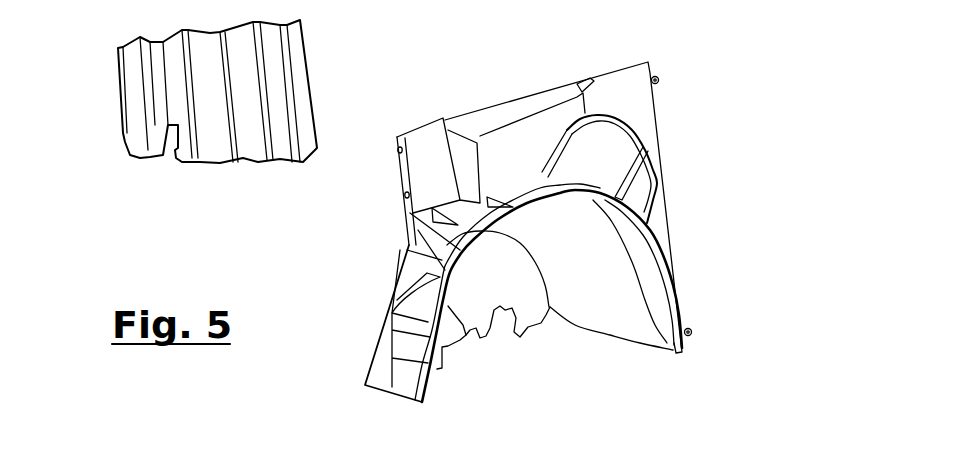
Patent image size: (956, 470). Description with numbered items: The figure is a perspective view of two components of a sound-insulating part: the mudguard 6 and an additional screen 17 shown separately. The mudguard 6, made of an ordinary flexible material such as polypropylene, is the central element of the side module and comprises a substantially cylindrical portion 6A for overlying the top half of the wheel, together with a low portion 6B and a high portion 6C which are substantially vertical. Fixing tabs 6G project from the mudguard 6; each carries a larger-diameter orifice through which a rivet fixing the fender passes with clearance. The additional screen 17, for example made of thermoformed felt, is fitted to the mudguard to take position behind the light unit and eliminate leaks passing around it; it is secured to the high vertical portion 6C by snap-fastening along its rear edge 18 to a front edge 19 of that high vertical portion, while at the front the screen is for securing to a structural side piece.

The mudguard 6 is at (202, 243).
The substantially cylindrical portion 6A is at (440, 238).
The low vertical portion 6B is at (450, 308).
The high vertical portion 6C is at (518, 170).
The fixing tab 6G is at (660, 82).
The additional screen 17 is at (205, 122).
The rear edge 18 is at (297, 57).
The front edge 19 is at (403, 170).